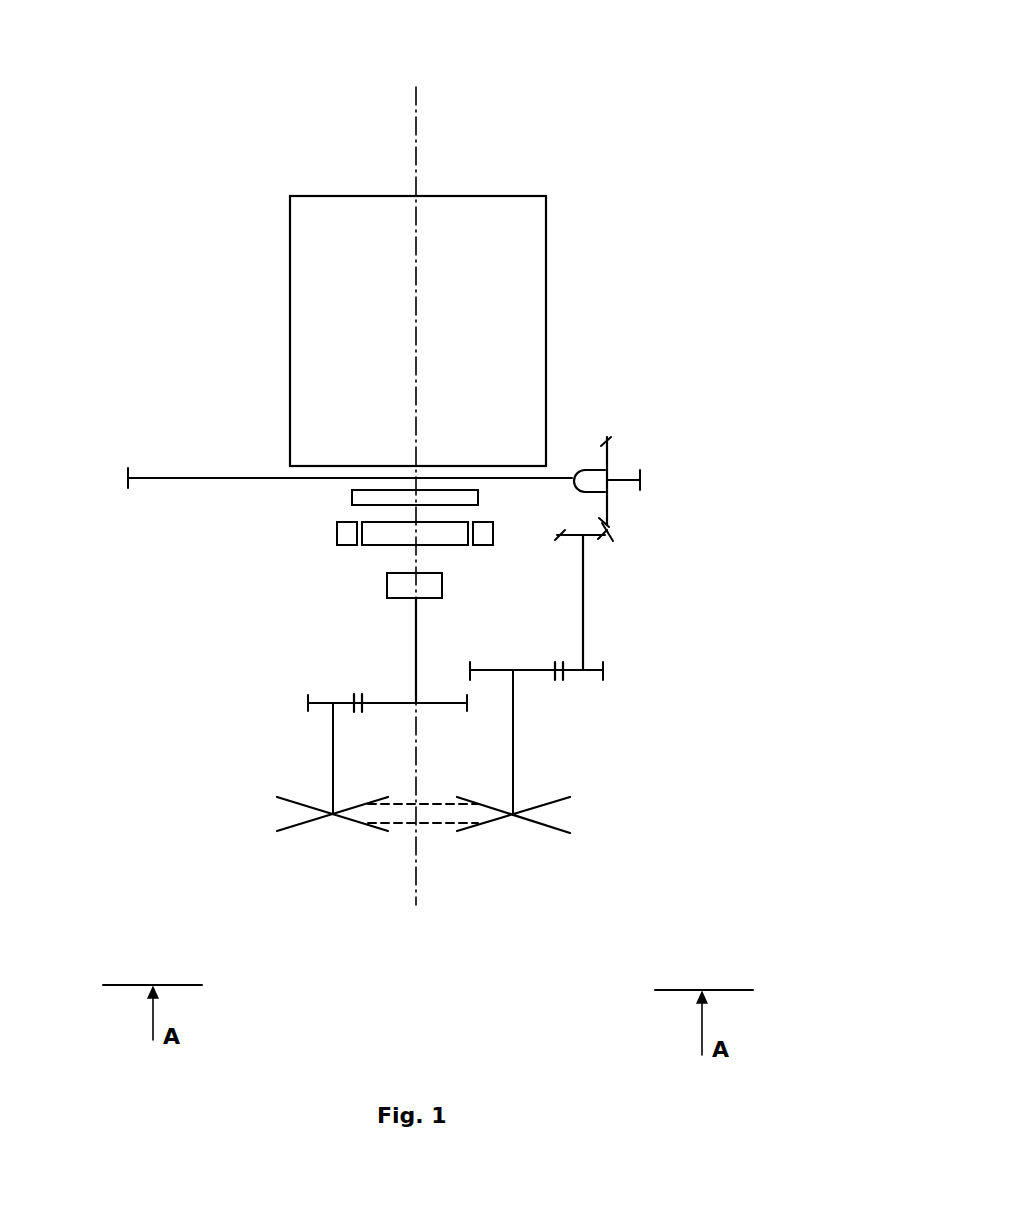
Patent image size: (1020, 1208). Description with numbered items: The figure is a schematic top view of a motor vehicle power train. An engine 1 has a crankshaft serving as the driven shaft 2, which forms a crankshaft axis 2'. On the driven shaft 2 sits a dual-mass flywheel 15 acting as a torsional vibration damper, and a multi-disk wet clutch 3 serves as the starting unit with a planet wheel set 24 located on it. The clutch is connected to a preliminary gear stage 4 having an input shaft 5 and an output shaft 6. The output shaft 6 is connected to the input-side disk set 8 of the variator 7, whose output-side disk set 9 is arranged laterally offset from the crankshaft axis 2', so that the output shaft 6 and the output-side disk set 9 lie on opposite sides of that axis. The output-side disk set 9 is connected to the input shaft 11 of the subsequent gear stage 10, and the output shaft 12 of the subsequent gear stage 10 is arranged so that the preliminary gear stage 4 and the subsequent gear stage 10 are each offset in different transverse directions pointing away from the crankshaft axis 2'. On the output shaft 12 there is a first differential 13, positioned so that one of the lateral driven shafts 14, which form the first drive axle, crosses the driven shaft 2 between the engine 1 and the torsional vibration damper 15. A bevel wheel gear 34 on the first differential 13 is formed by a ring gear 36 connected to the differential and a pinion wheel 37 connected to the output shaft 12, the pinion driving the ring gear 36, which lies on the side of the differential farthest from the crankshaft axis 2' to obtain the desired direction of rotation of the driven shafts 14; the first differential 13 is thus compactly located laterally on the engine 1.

The engine 1 is at (505, 238).
The driven shaft 2 is at (386, 425).
The crankshaft axis 2' is at (353, 471).
The multi-disk wet clutch 3 is at (368, 548).
The preliminary gear stage 4 is at (352, 690).
The input shaft 5 is at (412, 672).
The output shaft 6 is at (331, 733).
The variator 7 is at (433, 828).
The input-side disk set 8 is at (305, 823).
The output-side disk set 9 is at (535, 828).
The subsequent gear stage 10 is at (560, 686).
The input shaft 11 is at (514, 766).
The output shaft 12 is at (592, 640).
The first differential 13 is at (592, 466).
The lateral driven shafts 14 is at (170, 477).
The dual-mass flywheel 15 is at (350, 497).
The planet wheel set 24 is at (442, 580).
The bevel wheel gear 34 is at (620, 532).
The ring gear 36 is at (608, 500).
The pinion wheel 37 is at (596, 547).